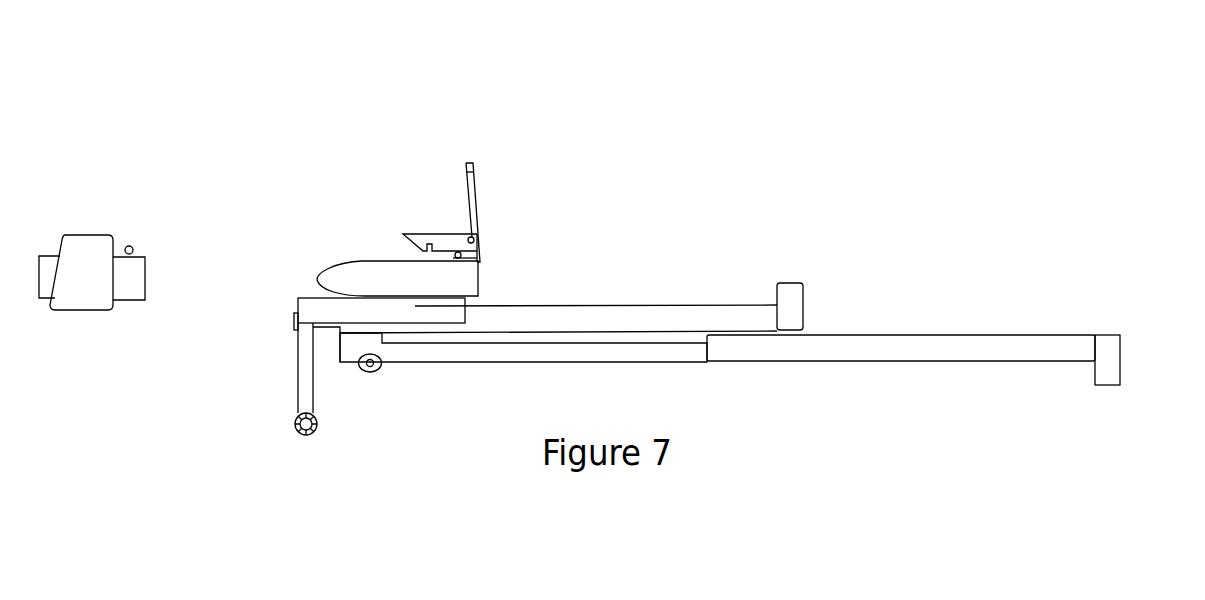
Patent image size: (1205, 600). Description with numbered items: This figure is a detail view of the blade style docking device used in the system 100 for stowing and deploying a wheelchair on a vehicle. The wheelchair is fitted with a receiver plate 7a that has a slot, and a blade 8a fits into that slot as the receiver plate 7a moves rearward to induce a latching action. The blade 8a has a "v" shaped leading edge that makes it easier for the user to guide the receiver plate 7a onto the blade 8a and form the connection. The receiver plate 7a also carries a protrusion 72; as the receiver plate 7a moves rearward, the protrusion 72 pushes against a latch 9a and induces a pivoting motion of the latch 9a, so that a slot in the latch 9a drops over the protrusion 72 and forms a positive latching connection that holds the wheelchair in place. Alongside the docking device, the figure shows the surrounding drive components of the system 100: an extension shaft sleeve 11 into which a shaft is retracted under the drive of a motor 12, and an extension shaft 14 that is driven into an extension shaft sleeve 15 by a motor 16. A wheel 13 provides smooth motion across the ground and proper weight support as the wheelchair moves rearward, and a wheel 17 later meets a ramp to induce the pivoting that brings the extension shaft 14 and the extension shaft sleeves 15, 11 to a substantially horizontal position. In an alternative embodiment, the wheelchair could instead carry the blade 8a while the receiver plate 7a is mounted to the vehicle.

The receiver plate 7a is at (92, 268).
The protrusion 72 is at (131, 247).
The latch 9a is at (448, 240).
The blade 8a is at (462, 277).
The extension shaft sleeve 11 is at (633, 317).
The motor 12 is at (787, 292).
The wheel 13 is at (292, 432).
The extension shaft 14 is at (473, 348).
The extension shaft sleeve 15 is at (927, 355).
The motor 16 is at (1105, 352).
The wheel 17 is at (375, 372).
The system 100 is at (1035, 183).